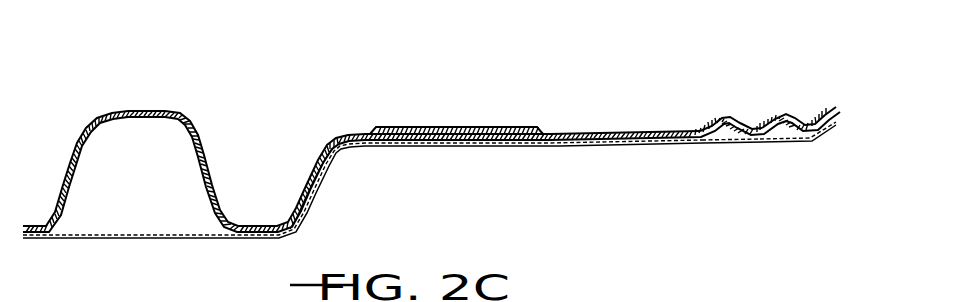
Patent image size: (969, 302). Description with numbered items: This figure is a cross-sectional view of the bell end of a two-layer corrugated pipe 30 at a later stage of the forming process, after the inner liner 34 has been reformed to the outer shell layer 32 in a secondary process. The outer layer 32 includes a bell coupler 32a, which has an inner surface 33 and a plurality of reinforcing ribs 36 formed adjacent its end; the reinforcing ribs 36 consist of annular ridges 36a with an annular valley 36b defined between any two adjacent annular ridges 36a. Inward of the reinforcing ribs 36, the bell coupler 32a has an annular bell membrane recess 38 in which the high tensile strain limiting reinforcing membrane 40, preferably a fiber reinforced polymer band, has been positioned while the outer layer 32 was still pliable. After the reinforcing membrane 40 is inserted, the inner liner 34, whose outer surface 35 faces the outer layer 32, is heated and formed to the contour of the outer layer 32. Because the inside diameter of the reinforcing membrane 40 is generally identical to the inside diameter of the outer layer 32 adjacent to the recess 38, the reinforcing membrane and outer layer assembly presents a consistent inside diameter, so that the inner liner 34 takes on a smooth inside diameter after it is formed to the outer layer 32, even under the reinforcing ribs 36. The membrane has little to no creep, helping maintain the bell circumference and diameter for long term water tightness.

The two-layer corrugated pipe 30 is at (118, 107).
The outer layer 32 is at (173, 111).
The bell coupler 32a is at (343, 133).
The inner surface 33 is at (567, 147).
The inner liner 34 is at (599, 152).
The outer surface 35 is at (737, 130).
The reinforcing ribs 36 is at (788, 112).
The annular ridges 36a is at (760, 145).
The annular valley 36b is at (735, 145).
The bell membrane recess 38 is at (397, 143).
The reinforcing membrane 40 is at (450, 131).